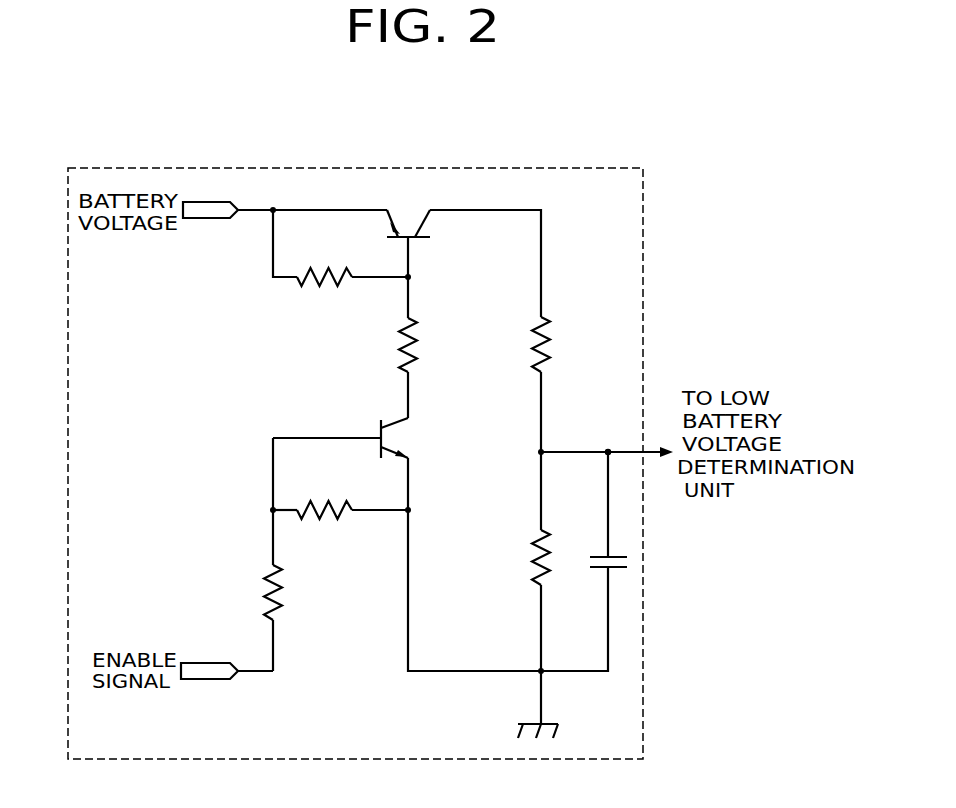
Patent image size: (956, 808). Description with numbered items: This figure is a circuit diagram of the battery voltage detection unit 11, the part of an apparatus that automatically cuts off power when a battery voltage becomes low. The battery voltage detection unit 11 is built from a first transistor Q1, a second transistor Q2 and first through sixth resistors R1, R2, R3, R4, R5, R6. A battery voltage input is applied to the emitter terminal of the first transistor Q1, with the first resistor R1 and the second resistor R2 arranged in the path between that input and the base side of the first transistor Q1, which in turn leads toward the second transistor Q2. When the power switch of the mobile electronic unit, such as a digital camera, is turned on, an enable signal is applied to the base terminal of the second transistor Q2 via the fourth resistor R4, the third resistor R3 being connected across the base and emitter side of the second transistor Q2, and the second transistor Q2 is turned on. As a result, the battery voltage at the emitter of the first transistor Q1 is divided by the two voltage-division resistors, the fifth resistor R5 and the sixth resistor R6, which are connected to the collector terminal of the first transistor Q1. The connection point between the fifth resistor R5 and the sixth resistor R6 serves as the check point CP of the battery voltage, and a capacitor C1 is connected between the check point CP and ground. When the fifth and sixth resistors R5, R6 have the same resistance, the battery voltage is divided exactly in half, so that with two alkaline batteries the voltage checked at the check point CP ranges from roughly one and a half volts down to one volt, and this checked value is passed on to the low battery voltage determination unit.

The battery voltage detection unit 11 is at (529, 168).
The first transistor Q1 is at (408, 209).
The second transistor Q2 is at (408, 438).
The first resistor R1 is at (324, 262).
The second resistor R2 is at (425, 345).
The third resistor R3 is at (324, 496).
The fourth resistor R4 is at (291, 592).
The fifth resistor R5 is at (558, 344).
The sixth resistor R6 is at (557, 557).
The capacitor C1 is at (618, 577).
The check point CP is at (603, 439).